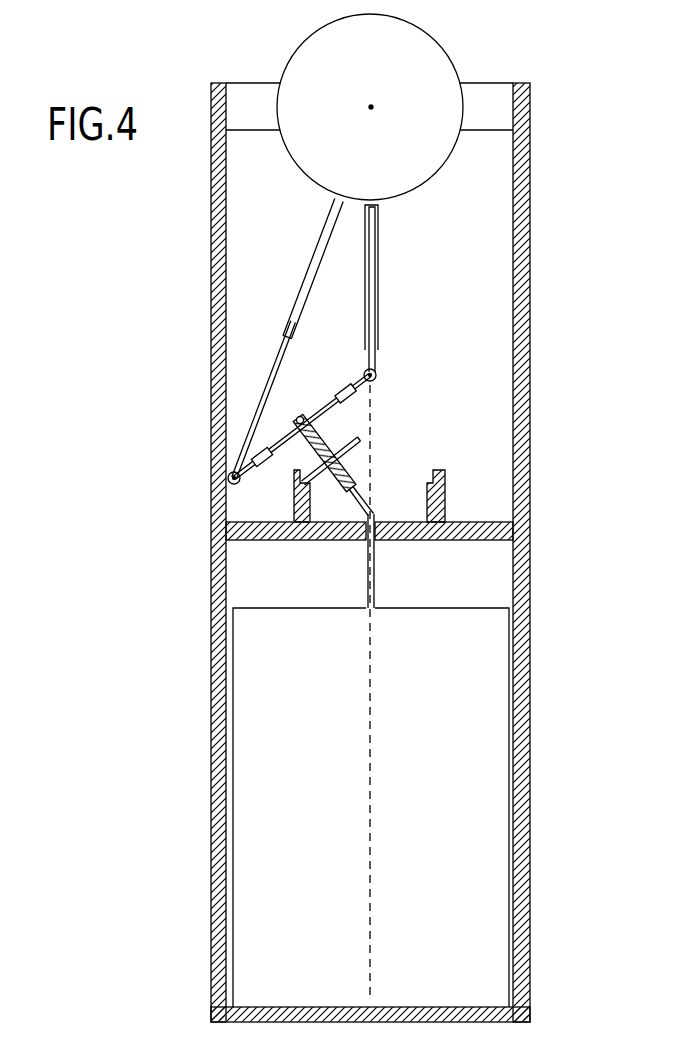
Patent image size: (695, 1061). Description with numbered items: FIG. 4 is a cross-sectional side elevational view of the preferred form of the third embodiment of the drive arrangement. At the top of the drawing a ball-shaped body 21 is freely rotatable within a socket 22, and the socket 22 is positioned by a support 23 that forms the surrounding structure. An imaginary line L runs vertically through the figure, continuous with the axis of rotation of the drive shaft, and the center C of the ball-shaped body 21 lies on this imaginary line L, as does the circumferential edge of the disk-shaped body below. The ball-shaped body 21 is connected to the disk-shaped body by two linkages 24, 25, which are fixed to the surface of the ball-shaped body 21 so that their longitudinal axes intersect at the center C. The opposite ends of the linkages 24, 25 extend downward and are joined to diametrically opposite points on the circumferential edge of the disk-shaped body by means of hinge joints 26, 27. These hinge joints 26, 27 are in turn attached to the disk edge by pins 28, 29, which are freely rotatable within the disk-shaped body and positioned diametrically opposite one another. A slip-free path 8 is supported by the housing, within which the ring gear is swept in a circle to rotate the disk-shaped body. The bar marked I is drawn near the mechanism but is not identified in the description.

The slip-free path 8 is at (432, 470).
The ball-shaped body 21 is at (434, 36).
The socket 22 is at (278, 82).
The support 23 is at (531, 227).
The linkage 24 is at (379, 307).
The linkage 25 is at (286, 313).
The hinge joint 26 is at (378, 372).
The hinge joint 27 is at (228, 478).
The pin 28 is at (252, 466).
The pin 29 is at (357, 377).
The center of the ball-shaped body C is at (374, 105).
The imaginary line L is at (381, 395).
The lever bar I is at (322, 410).